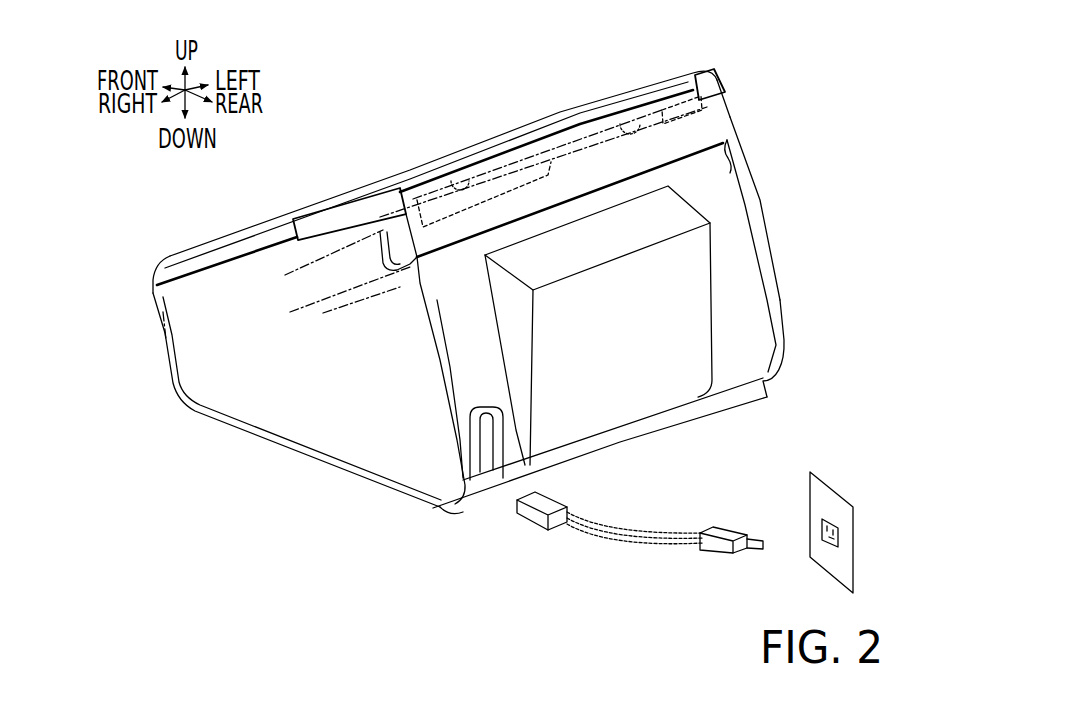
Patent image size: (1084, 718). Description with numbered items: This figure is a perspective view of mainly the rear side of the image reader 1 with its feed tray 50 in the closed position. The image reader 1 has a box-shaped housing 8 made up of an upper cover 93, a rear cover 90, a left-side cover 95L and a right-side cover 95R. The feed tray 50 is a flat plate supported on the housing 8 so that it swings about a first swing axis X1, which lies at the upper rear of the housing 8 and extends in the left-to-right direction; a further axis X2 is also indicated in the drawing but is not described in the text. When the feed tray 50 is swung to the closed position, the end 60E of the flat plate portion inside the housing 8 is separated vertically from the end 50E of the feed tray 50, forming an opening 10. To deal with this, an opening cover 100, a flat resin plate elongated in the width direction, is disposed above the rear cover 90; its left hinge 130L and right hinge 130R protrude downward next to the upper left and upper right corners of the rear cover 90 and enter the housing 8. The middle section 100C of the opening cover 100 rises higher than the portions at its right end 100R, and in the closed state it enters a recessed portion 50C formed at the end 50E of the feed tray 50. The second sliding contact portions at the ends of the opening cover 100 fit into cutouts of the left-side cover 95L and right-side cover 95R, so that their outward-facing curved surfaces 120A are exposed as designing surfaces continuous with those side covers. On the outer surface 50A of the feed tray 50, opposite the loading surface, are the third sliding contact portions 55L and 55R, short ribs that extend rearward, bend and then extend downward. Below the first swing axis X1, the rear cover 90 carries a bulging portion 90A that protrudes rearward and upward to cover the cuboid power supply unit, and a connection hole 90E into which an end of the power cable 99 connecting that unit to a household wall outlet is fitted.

The image reader 1 is at (472, 74).
The housing 8 is at (789, 312).
The opening 10 is at (594, 150).
The feed tray 50 is at (229, 231).
The outer surface 50A is at (311, 203).
The recessed portion 50C is at (461, 186).
The end of the feed tray 50E is at (631, 124).
The third sliding contact portion 55R is at (396, 189).
The third sliding contact portion 55L is at (699, 66).
The end of the flat plate portion 60E is at (547, 166).
The rear cover 90 is at (749, 342).
The bulging portion 90A is at (603, 243).
The connection hole 90E is at (487, 448).
The upper cover 93 is at (212, 273).
The right-side cover 95R is at (286, 414).
The left-side cover 95L is at (781, 261).
The power cable 99 is at (648, 538).
The opening cover 100 is at (462, 230).
The middle section 100C is at (672, 97).
The right end 100R is at (315, 243).
The curved surfaces 120A is at (297, 312).
The right hinge 130R is at (413, 279).
The left hinge 130L is at (741, 200).
The first swing axis X1 is at (733, 108).
The second position X2 is at (739, 155).